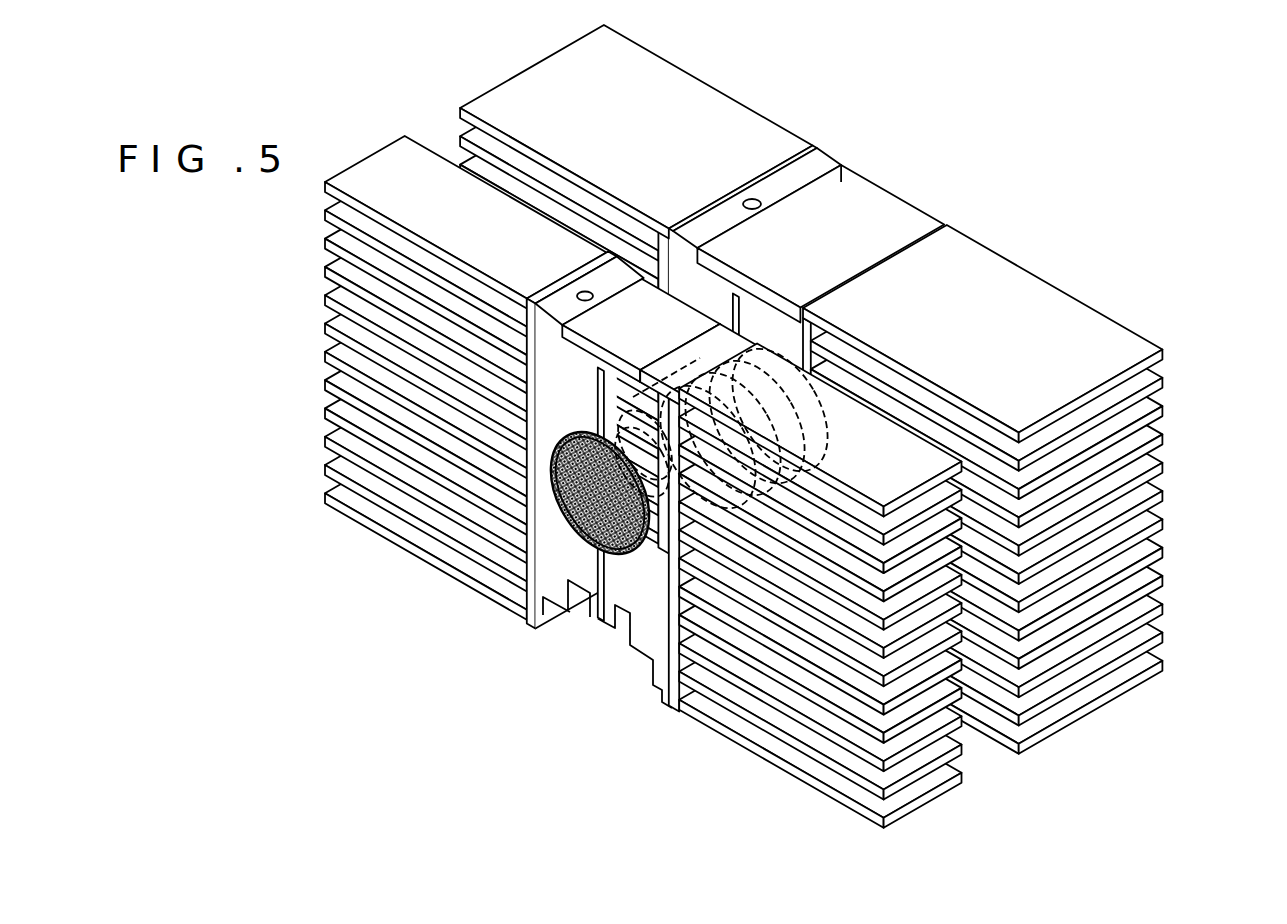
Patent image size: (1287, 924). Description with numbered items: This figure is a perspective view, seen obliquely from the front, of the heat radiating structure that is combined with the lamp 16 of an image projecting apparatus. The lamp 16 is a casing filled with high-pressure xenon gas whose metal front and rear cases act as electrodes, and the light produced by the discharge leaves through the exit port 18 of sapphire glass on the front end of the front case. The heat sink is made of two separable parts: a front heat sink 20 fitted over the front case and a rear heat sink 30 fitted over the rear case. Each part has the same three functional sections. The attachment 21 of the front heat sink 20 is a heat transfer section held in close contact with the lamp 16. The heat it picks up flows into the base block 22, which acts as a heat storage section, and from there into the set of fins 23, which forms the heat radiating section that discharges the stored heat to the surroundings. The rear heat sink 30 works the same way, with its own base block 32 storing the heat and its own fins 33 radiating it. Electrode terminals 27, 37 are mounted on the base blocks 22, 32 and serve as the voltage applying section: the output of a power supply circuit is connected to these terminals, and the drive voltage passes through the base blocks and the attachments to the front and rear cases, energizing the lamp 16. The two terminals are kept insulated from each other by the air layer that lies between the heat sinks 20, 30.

The lamp 16 is at (745, 505).
The exit port 18 is at (593, 553).
The front heat sink 20 is at (353, 154).
The attachment 21 is at (547, 518).
The base block 22 is at (565, 396).
The fins 23 is at (670, 482).
The electrode terminal 27 is at (538, 304).
The rear heat sink 30 is at (506, 60).
The base block 32 is at (819, 191).
The fins 33 is at (860, 389).
The electrode terminal 37 is at (757, 202).